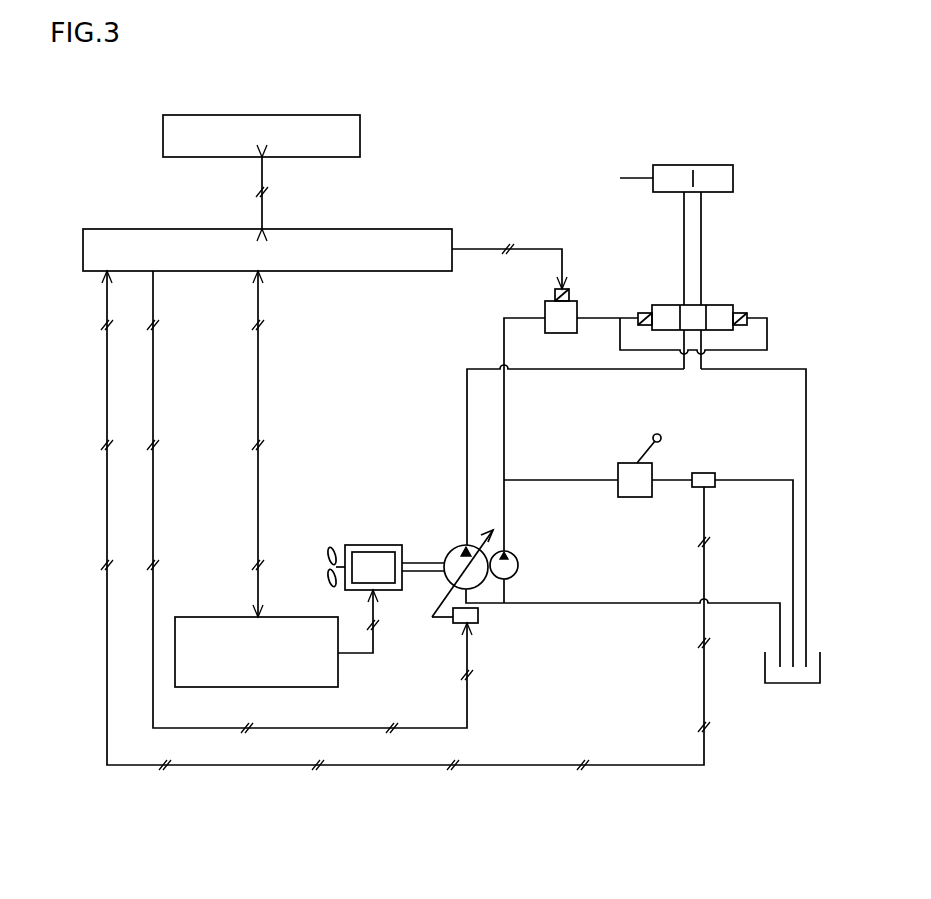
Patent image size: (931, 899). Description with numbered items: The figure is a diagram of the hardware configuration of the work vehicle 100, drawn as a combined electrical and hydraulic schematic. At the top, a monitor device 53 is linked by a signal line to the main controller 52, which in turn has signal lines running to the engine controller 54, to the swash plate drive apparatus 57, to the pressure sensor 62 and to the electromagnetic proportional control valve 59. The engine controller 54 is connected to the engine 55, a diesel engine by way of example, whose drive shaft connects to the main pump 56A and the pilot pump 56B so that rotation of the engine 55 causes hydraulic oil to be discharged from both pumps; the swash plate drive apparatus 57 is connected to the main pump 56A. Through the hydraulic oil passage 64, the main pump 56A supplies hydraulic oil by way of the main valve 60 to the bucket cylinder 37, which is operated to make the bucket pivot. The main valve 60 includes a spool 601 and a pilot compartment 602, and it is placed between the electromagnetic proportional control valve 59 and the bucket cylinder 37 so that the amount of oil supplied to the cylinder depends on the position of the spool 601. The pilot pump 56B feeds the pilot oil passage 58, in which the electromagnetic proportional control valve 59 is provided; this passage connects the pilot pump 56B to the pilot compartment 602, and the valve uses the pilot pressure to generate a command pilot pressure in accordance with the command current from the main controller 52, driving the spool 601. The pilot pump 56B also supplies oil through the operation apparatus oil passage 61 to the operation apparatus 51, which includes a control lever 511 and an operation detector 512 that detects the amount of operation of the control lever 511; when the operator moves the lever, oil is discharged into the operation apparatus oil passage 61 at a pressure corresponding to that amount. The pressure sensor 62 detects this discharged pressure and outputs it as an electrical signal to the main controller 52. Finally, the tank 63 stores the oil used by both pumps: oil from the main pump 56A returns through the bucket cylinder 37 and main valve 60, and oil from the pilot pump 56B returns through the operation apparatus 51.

The work vehicle 100 is at (141, 78).
The bucket cylinder 37 is at (718, 164).
The operation apparatus 51 is at (624, 476).
The control lever 511 is at (642, 449).
The operation detector 512 is at (635, 499).
The main controller 52 is at (137, 228).
The monitor device 53 is at (262, 113).
The engine controller 54 is at (290, 690).
The engine 55 is at (366, 543).
The main pump 56A is at (453, 548).
The pilot pump 56B is at (521, 566).
The swash plate drive apparatus 57 is at (452, 622).
The pilot oil passage 58 is at (503, 337).
The electromagnetic proportional control valve 59 is at (545, 311).
The main valve 60 is at (706, 310).
The spool 601 is at (742, 311).
The pilot compartment 602 is at (668, 304).
The operation apparatus oil passage 61 is at (530, 479).
The pressure sensor 62 is at (704, 472).
The tank 63 is at (790, 688).
The hydraulic oil passage 64 is at (466, 427).